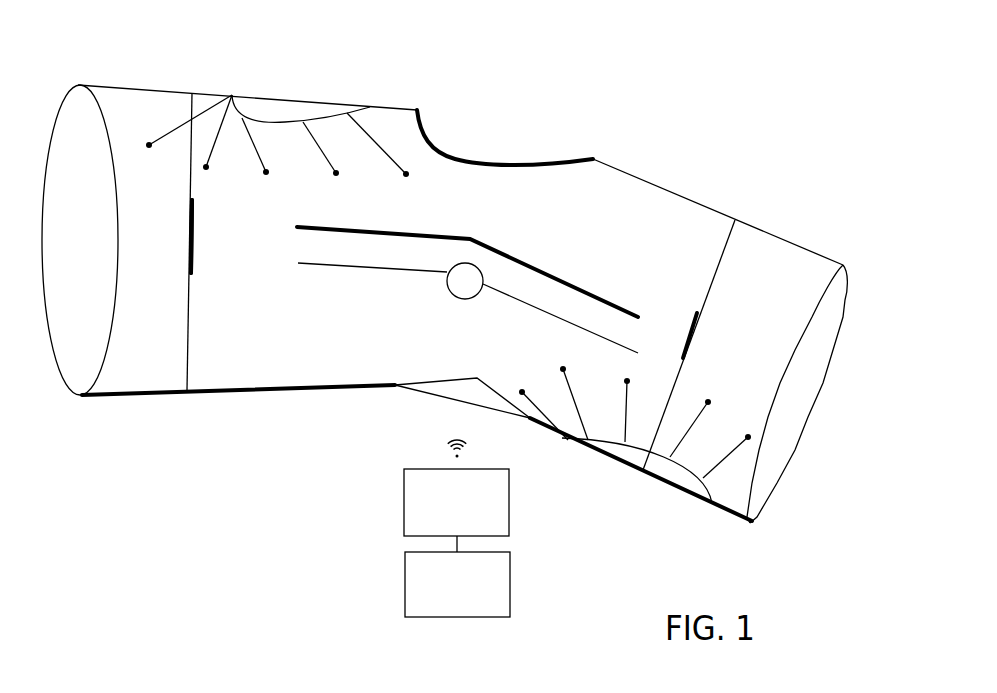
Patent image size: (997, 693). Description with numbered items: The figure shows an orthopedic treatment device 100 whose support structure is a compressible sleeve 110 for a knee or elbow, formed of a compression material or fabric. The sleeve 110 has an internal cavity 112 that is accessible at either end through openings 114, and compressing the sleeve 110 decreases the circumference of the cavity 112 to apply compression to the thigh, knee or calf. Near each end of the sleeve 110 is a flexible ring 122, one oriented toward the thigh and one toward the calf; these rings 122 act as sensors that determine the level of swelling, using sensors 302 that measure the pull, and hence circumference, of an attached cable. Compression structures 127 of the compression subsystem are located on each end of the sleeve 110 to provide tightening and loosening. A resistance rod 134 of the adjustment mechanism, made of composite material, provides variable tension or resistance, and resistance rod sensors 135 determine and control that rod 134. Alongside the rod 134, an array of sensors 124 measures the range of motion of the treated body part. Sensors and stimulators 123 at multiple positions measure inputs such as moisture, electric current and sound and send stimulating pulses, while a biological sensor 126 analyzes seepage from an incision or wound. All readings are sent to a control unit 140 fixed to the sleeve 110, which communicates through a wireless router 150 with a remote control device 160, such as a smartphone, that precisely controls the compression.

The device 100 is at (783, 78).
The sleeve 110 is at (803, 247).
The internal cavity 112 is at (802, 382).
The openings 114 is at (55, 122).
The flexible rings 122 is at (187, 353).
The sensor(s) and stimulator(s) 123 is at (288, 107).
The array of sensors 124 is at (565, 280).
The biological sensor 126 is at (565, 156).
The compression structures 127 is at (243, 397).
The resistance rod 134 is at (348, 267).
The resistance rod sensors 135 is at (457, 285).
The control unit 140 is at (445, 385).
The wireless router 150 is at (412, 507).
The remote control device 160 is at (413, 600).
The sensors 302 is at (193, 248).